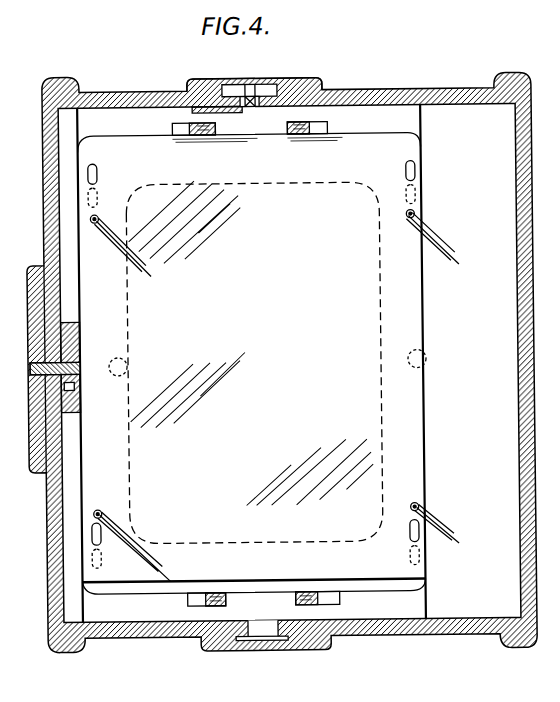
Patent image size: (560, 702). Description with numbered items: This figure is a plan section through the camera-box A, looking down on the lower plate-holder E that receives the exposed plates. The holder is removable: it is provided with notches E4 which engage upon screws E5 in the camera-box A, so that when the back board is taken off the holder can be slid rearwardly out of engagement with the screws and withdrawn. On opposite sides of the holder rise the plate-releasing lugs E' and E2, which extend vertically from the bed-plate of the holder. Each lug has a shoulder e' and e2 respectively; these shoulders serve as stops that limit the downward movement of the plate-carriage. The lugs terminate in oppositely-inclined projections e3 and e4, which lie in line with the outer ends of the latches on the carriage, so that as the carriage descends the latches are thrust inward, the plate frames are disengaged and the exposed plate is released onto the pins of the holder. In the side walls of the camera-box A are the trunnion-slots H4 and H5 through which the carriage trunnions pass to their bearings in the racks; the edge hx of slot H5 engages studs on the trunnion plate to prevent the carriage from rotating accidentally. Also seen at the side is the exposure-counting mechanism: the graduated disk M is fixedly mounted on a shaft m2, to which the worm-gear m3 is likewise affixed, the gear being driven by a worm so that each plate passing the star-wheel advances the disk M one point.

The camera-box A is at (535, 350).
The trunnion-slot H5 is at (278, 88).
The edge of the trunnion-slot hx is at (255, 86).
The screws E5 is at (128, 366).
The notches E4 is at (108, 366).
The plate-releasing lug E2 is at (250, 127).
The shoulder e2 is at (176, 127).
The inclined projection e4 is at (205, 134).
The plate-releasing lug E' is at (254, 602).
The shoulder e' is at (262, 601).
The inclined projection e3 is at (210, 605).
The trunnion-slot H4 is at (259, 628).
The graduated disk M is at (28, 343).
The worm-gear m3 is at (78, 342).
The shaft m2 is at (30, 366).